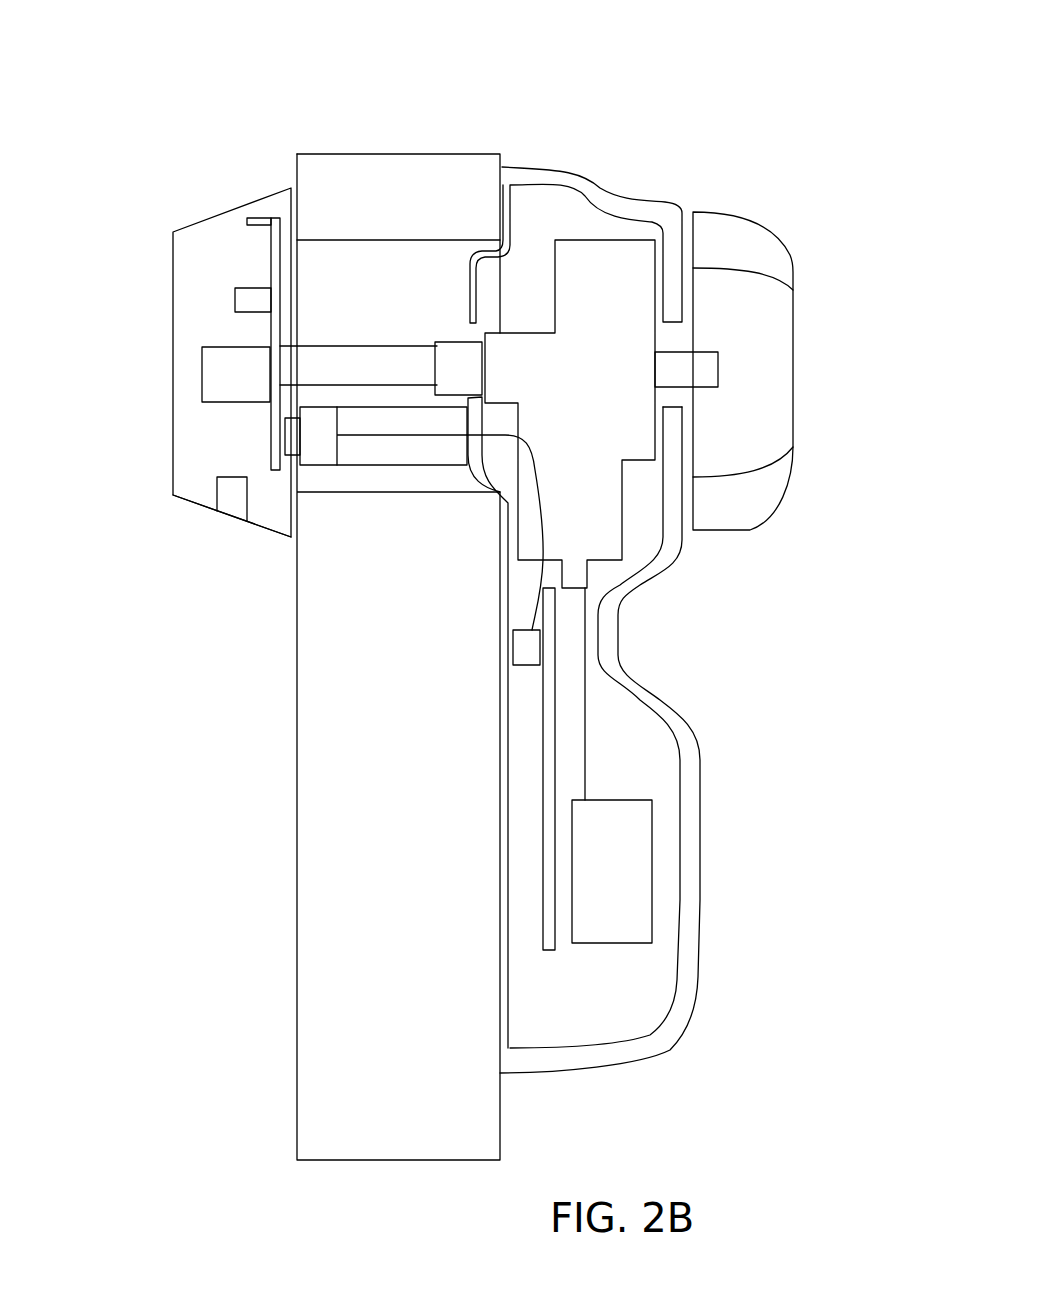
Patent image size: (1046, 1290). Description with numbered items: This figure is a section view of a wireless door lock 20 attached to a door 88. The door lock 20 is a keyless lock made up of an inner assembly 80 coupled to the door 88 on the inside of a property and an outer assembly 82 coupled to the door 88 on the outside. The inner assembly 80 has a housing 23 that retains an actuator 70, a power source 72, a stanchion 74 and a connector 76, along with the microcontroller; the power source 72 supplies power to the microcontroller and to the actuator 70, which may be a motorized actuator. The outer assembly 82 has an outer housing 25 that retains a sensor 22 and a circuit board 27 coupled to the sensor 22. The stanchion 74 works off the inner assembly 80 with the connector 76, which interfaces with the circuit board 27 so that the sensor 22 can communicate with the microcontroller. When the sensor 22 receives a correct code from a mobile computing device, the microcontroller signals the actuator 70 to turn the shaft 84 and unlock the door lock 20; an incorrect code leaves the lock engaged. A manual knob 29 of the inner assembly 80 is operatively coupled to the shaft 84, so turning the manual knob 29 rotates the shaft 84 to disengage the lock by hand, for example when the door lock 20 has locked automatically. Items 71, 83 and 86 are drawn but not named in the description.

The door lock 20 is at (562, 64).
The sensor 22 is at (245, 298).
The housing 23 is at (610, 638).
The outer housing 25 is at (182, 498).
The circuit board 27 is at (273, 260).
The manual knob 29 is at (755, 493).
The actuator 70 is at (618, 288).
The circuit board 71 is at (547, 747).
The power source 72 is at (632, 862).
The stanchion 74 is at (394, 463).
The connector 76 is at (315, 445).
The inner assembly 80 is at (757, 742).
The outer assembly 82 is at (130, 392).
The locking tab 83 is at (237, 518).
The shaft 84 is at (389, 362).
The retaining clip 86 is at (258, 218).
The door 88 is at (347, 753).